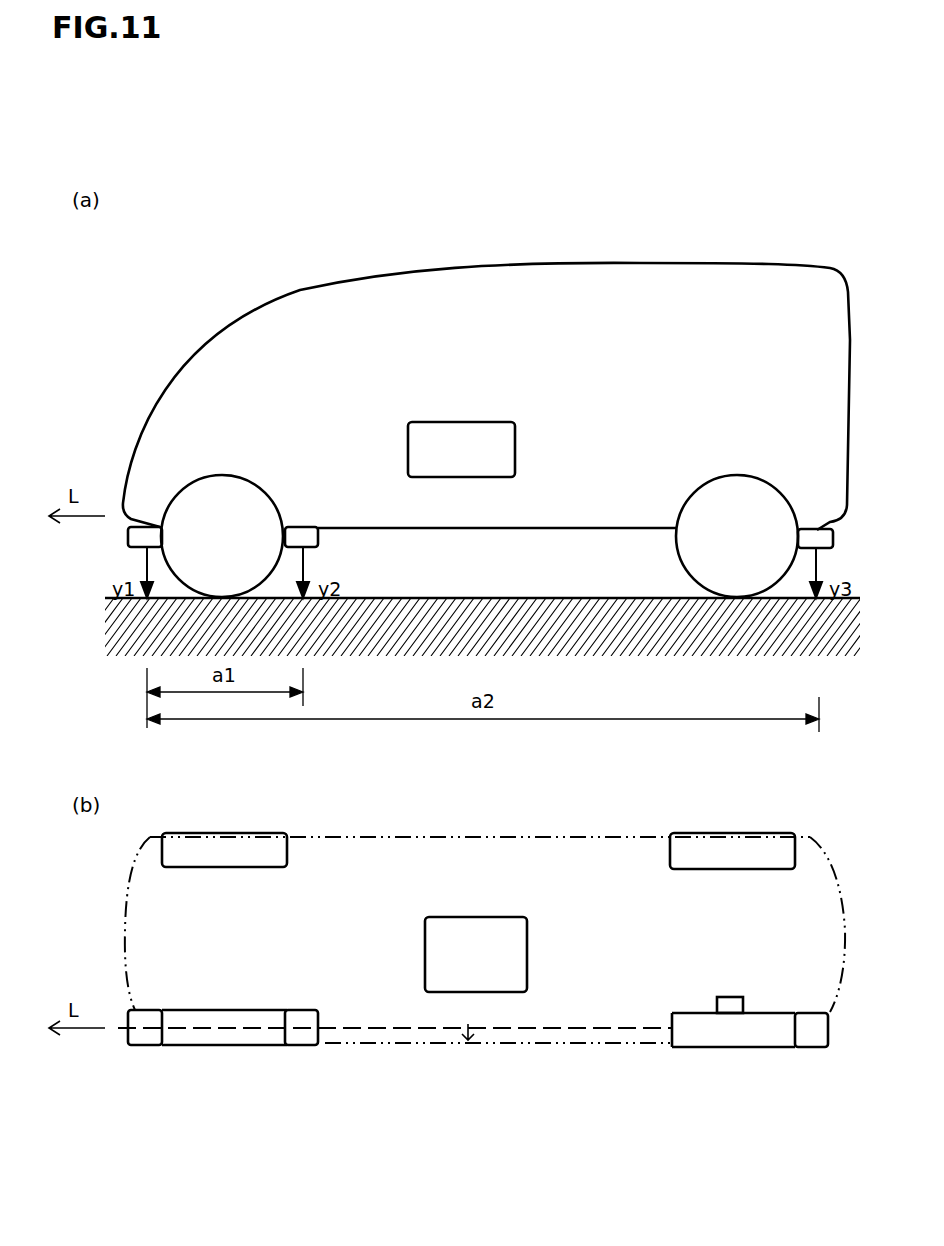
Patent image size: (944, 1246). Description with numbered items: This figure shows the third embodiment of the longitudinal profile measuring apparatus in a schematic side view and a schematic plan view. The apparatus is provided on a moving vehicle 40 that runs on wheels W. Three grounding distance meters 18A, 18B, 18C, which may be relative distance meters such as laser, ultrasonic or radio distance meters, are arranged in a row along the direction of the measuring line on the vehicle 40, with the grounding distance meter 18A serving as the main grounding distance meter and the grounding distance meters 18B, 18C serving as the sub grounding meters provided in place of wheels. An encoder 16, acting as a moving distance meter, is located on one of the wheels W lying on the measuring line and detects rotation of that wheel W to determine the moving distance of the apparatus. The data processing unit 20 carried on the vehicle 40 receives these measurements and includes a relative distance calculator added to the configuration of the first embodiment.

The moving vehicle 40 is at (556, 265).
The data processing unit 20 is at (469, 428).
The grounding distance meter 18A is at (146, 530).
The grounding distance meter 18B is at (300, 530).
The grounding distance meter 18C is at (807, 534).
The encoder 16 is at (732, 997).
The wheel W is at (224, 484).